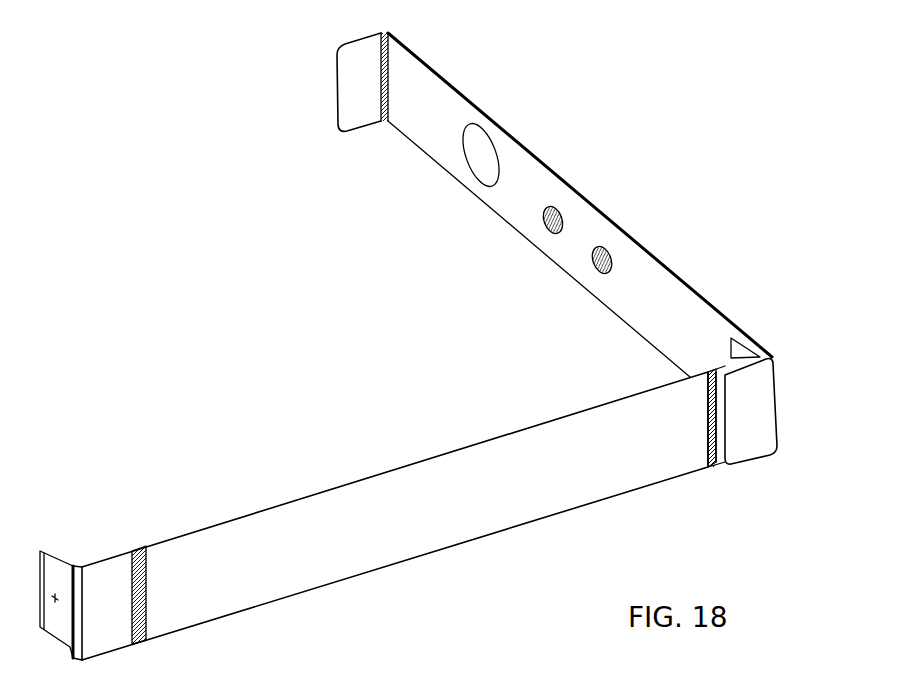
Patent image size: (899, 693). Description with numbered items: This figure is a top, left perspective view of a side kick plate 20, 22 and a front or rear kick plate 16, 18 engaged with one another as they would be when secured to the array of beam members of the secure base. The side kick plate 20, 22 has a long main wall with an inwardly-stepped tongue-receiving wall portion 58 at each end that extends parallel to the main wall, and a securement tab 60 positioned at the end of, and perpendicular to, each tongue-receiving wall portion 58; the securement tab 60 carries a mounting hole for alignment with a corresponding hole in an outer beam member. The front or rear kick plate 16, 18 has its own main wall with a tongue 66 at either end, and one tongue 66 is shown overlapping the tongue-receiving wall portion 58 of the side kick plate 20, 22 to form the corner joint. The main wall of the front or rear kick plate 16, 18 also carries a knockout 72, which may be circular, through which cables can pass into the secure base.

The front kick plate 16 is at (576, 205).
The rear kick plate 18 is at (607, 140).
The side kick plate 20 is at (399, 513).
The side kick plate 22 is at (362, 452).
The inwardly-stepped tongue-receiving wall portion 58 is at (98, 590).
The securement tab 60 is at (55, 580).
The tongue 66 is at (342, 73).
The knockout 72 is at (480, 157).